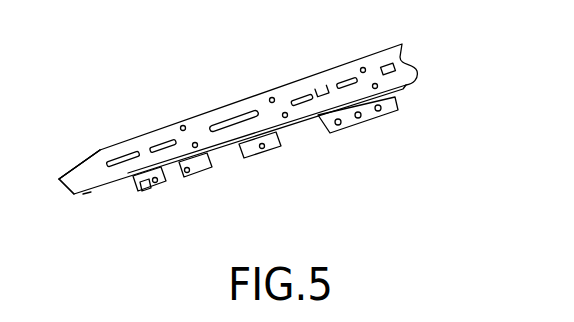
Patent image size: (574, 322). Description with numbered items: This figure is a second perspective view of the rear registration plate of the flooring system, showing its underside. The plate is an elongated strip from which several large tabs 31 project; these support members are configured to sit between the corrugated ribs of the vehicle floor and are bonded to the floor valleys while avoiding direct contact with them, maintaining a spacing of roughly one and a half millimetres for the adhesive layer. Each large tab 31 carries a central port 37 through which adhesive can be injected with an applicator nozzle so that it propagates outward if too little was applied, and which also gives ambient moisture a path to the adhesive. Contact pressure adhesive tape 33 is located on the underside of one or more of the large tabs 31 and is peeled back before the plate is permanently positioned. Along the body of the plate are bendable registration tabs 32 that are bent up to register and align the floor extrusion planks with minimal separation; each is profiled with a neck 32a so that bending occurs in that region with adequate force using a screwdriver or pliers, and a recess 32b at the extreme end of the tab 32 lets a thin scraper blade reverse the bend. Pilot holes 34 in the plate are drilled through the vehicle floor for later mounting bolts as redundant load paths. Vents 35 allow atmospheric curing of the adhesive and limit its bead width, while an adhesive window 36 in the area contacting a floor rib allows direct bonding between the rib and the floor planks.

The large tab 31 is at (263, 148).
The registration tab 32 is at (149, 157).
The neck 32a is at (118, 144).
The recess 32b is at (140, 190).
The contact pressure adhesive tape 33 is at (150, 190).
The pilot hole 34 is at (197, 142).
The vent 35 is at (248, 92).
The adhesive window 36 is at (395, 72).
The central port 37 is at (188, 172).